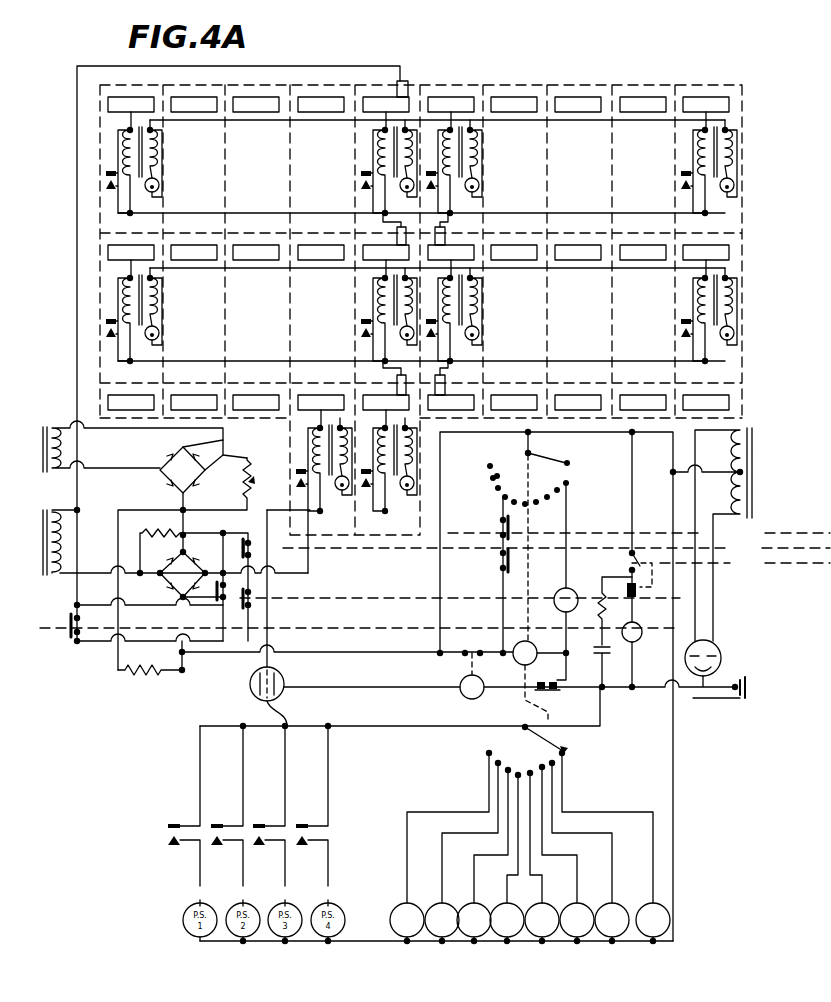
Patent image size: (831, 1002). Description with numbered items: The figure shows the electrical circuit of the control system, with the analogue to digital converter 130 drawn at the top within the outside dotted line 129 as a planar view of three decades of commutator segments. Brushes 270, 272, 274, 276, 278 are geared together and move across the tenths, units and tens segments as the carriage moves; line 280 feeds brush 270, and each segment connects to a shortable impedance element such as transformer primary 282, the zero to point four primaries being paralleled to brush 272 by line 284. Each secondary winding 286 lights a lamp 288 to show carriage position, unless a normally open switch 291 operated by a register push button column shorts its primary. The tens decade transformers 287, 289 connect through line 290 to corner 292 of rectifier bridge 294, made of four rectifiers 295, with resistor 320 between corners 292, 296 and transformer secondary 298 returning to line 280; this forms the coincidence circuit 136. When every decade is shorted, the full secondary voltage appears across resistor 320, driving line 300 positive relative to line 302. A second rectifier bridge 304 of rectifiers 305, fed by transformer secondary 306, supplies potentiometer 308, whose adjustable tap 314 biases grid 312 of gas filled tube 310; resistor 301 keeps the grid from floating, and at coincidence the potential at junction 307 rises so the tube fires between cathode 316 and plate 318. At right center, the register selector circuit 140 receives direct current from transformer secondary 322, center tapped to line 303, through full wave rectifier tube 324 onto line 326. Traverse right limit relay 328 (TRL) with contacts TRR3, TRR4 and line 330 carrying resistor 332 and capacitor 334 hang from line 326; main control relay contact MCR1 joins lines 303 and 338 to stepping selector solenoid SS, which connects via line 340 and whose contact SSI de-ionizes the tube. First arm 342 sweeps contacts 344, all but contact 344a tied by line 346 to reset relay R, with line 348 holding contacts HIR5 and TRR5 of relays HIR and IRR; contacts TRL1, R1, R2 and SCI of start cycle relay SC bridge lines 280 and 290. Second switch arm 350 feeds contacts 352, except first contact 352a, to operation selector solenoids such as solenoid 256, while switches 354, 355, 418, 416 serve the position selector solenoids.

The outside dotted line 129 is at (462, 88).
The analogue to digital converter 130 is at (738, 85).
The carriage position coincidence circuit 136 is at (112, 555).
The register selector circuit 140 is at (555, 586).
The operation selector solenoid 256 is at (392, 908).
The brush 270 is at (410, 86).
The brush 272 is at (397, 233).
The brush 274 is at (445, 233).
The brush 276 is at (397, 385).
The brush 278 is at (433, 385).
The line 280 is at (400, 66).
The transformer primary 282 is at (384, 140).
The line 284 is at (374, 204).
The secondary winding 286 is at (452, 149).
The transformer 287 is at (309, 491).
The lamp 288 is at (380, 213).
The transformer 289 is at (389, 462).
The line 290 is at (299, 546).
The normally open switch 291 is at (368, 174).
The corner 292 is at (205, 556).
The rectifier bridge 294 is at (182, 575).
The rectifier 295 is at (178, 559).
The corner 296 is at (166, 577).
The transformer secondary 298 is at (74, 502).
The line 300 is at (185, 525).
The resistor 301 is at (161, 676).
The line 302 is at (180, 653).
The line 303 is at (378, 652).
The second rectifier bridge 304 is at (191, 466).
The rectifier 305 is at (174, 458).
The transformer secondary 306 is at (76, 428).
The junction 307 is at (176, 486).
The potentiometer 308 is at (248, 458).
The gas filled tube 310 is at (272, 710).
The grid 312 is at (281, 672).
The adjustable tap 314 is at (250, 478).
The cathode 316 is at (250, 689).
The plate 318 is at (282, 692).
The resistor 320 is at (156, 531).
The transformer secondary 322 is at (744, 438).
The full wave rectifier tube 324 is at (721, 665).
The line 326 is at (394, 728).
The traverse right limit relay 328 is at (639, 646).
The line 330 is at (615, 611).
The resistor 332 is at (620, 586).
The capacitor 334 is at (598, 655).
The line 338 is at (479, 658).
The line 340 is at (548, 653).
The first arm 342 is at (535, 458).
The contacts 344 is at (500, 470).
The contact 344a is at (570, 466).
The line 346 is at (536, 505).
The line 348 is at (500, 594).
The second switch arm 350 is at (548, 737).
The contacts 352 is at (530, 815).
The first contact 352a is at (570, 752).
The normally open switch 354 is at (186, 826).
The switch 355 is at (233, 826).
The switch 416 is at (322, 826).
The switch 418 is at (278, 826).
The normally open contact SC1 SCI is at (220, 579).
The normally open contact R1 is at (216, 592).
The normally closed contact R2 is at (256, 598).
The normally open contact TRL1 is at (68, 640).
The normally closed contact HIR5 is at (500, 530).
The normally closed contact TRR5 is at (500, 562).
The normally open contact TRR4 is at (624, 562).
The normally closed contact TRR3 is at (622, 600).
The traverse right limit relay TRL is at (632, 656).
The normally open contact MCR1 is at (482, 641).
The stepping selector solenoid SS is at (525, 653).
The normally closed contact SS1 SSI is at (542, 692).
The relay HIR is at (746, 532).
The start cycle relay SC is at (753, 548).
The relay IRR is at (751, 563).